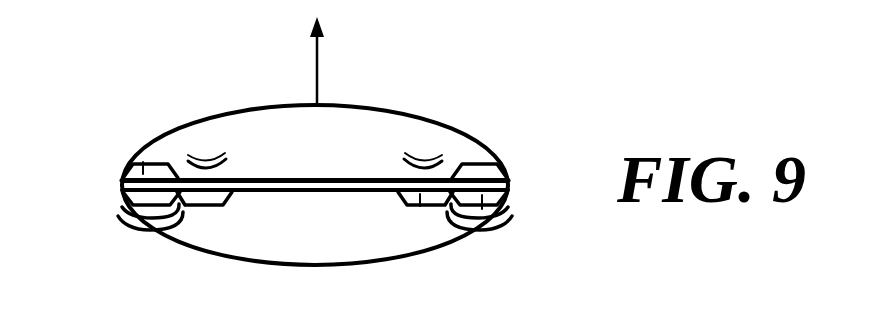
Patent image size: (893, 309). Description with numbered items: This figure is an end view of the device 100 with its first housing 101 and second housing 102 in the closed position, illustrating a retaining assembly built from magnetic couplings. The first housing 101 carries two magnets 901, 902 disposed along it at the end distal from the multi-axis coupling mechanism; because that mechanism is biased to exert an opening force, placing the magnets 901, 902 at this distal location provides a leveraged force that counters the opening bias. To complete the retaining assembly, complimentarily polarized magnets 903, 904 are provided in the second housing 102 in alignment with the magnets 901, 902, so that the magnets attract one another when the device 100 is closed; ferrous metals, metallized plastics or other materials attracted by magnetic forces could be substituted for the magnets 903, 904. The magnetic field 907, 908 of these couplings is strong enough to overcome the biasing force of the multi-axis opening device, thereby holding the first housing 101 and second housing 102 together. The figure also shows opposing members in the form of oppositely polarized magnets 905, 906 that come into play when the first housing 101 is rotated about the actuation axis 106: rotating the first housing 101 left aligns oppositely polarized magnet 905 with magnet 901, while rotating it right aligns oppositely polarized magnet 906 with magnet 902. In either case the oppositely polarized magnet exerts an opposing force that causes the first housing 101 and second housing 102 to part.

The device 100 is at (120, 138).
The first housing 101 is at (367, 135).
The second housing 102 is at (360, 252).
The actuation axis 106 is at (318, 73).
The magnet 901 is at (130, 173).
The magnet 902 is at (467, 173).
The complimentarily polarized magnet 903 is at (148, 193).
The complimentarily polarized magnet 904 is at (497, 228).
The oppositely polarized magnet 905 is at (204, 193).
The oppositely polarized magnet 906 is at (418, 201).
The magnetic field 907 is at (215, 235).
The magnetic field 908 is at (450, 212).